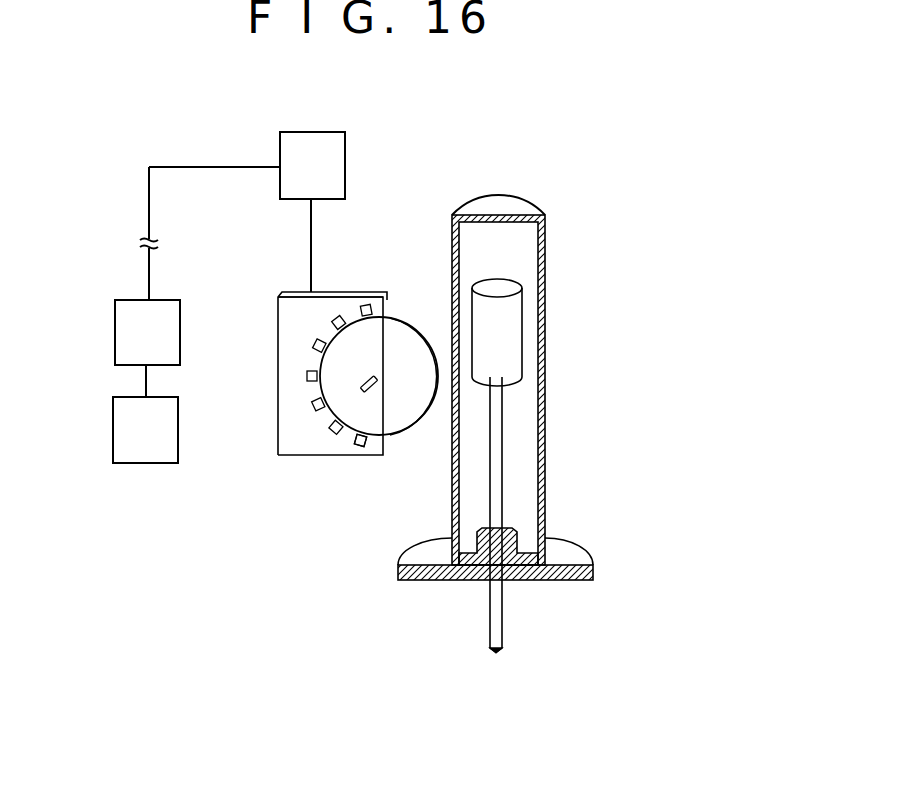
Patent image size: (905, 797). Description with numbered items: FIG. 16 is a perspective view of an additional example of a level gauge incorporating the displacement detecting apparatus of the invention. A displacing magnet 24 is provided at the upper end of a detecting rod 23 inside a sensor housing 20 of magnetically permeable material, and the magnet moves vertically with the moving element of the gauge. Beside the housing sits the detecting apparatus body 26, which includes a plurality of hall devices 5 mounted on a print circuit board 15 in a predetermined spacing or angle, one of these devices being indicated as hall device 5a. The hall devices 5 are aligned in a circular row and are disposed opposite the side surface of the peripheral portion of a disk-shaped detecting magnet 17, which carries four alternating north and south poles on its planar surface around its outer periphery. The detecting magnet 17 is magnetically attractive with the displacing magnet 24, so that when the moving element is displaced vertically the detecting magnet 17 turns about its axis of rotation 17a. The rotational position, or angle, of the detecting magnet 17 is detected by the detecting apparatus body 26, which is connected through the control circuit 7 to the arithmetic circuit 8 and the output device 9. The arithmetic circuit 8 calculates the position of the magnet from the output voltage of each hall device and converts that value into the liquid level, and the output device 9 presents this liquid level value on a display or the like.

The hall device 5 is at (350, 316).
The sensor element 5a is at (352, 437).
The control circuit 7 is at (300, 132).
The arithmetic circuit 8 is at (115, 338).
The output device 9 is at (113, 435).
The print circuit board 15 is at (277, 405).
The detecting magnet 17 is at (384, 360).
The axis of rotation 17a is at (372, 393).
The housing 20 is at (545, 258).
The detecting rod 23 is at (498, 450).
The displacing magnet 24 is at (518, 332).
The detecting apparatus body 26 is at (324, 378).